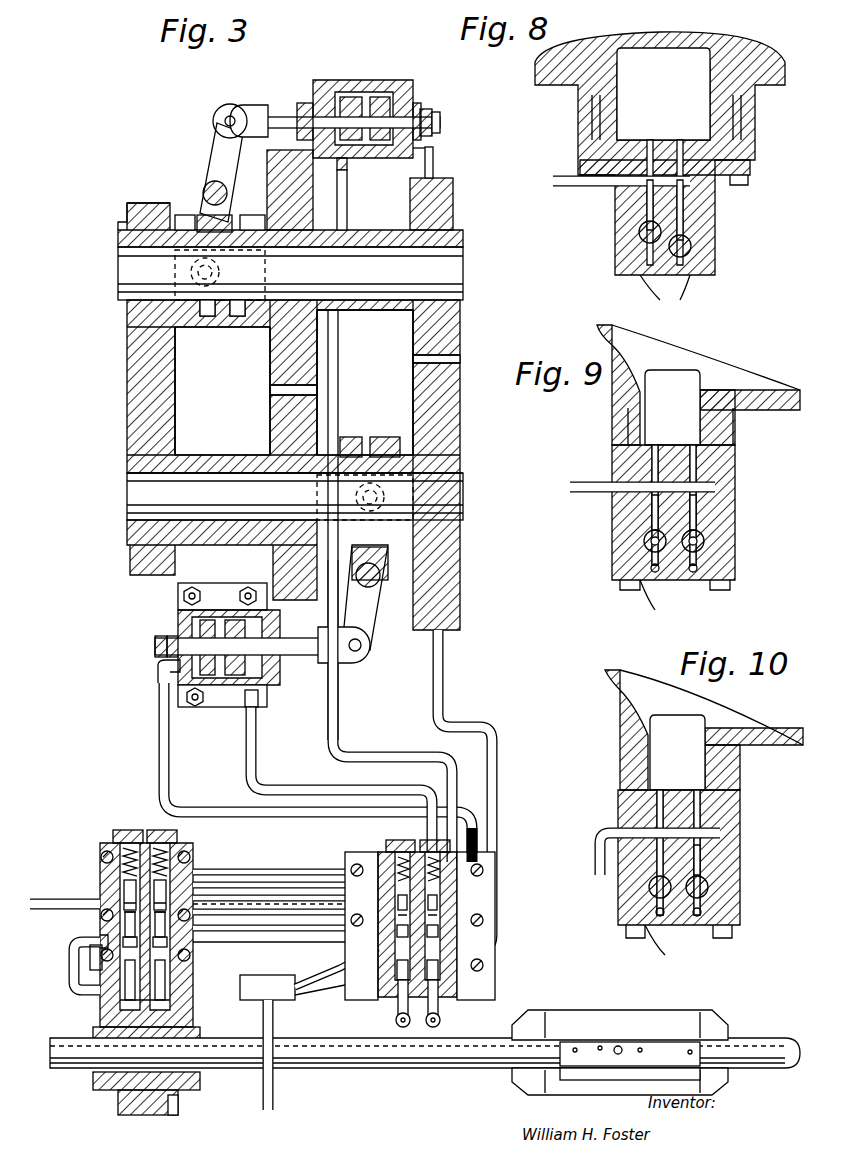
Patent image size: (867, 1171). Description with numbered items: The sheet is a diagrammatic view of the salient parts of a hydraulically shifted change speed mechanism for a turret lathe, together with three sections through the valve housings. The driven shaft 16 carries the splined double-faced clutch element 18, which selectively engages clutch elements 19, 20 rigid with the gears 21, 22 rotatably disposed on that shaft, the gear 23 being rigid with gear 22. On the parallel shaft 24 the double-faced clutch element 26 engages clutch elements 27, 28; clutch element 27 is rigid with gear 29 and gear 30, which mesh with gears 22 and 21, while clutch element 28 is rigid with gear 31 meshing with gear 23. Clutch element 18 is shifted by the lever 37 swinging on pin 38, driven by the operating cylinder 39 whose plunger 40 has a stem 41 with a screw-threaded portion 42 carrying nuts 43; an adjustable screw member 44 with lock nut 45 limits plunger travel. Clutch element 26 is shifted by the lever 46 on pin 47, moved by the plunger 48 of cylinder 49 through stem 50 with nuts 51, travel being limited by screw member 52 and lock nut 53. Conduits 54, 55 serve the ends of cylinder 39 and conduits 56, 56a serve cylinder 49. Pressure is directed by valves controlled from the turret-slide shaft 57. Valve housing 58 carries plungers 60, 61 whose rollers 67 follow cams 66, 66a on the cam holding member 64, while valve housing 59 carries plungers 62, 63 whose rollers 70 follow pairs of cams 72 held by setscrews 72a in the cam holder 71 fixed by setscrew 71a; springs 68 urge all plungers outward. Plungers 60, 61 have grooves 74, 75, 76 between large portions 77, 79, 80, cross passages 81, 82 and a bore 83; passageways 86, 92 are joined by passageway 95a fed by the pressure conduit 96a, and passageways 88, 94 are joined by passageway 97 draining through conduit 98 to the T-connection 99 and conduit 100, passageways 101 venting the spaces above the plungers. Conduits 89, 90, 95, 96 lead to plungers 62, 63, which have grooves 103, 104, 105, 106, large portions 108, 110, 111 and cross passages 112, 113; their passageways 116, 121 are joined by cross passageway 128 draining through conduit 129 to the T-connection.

In FIG. 3, the shaft 16 is at (347, 310).
In FIG. 3, the double-faced clutch element 18 is at (208, 318).
In FIG. 3, the clutch element 19 is at (182, 220).
In FIG. 3, the clutch element 20 is at (255, 225).
In FIG. 3, the gear 21 is at (152, 210).
In FIG. 3, the gear 22 is at (305, 192).
In FIG. 3, the gear 23 is at (413, 340).
In FIG. 3, the shaft 24 is at (212, 480).
In FIG. 3, the double-faced clutch element 26 is at (375, 440).
In FIG. 3, the clutch element 27 is at (332, 440).
In FIG. 3, the clutch element 28 is at (400, 440).
In FIG. 3, the gear 29 is at (270, 405).
In FIG. 3, the gear 30 is at (175, 395).
In FIG. 3, the gear 31 is at (413, 388).
In FIG. 3, the lever 37 is at (215, 152).
In FIG. 3, the pin 38 is at (203, 190).
In FIG. 3, the operating cylinder 39 is at (413, 84).
In FIG. 3, the plunger 40 is at (359, 140).
In FIG. 3, the stem 41 is at (282, 116).
In FIG. 3, the screw-threaded portion 42 is at (356, 95).
In FIG. 3, the nuts 43 is at (378, 96).
In FIG. 3, the adjustable screw member 44 is at (440, 118).
In FIG. 3, the lock nut 45 is at (428, 110).
In FIG. 3, the lever 46 is at (372, 605).
In FIG. 3, the pin 47 is at (372, 583).
In FIG. 3, the plunger 48 is at (178, 628).
In FIG. 3, the cylinder 49 is at (222, 608).
In FIG. 3, the stem 50 is at (300, 638).
In FIG. 3, the nuts 51 is at (222, 696).
In FIG. 3, the screw member 52 is at (170, 656).
In FIG. 3, the lock nut 53 is at (158, 645).
In FIG. 3, the conduit 54 is at (348, 205).
In FIG. 3, the conduit 55 is at (433, 165).
In FIG. 3, the conduit 56 is at (170, 790).
In FIG. 3, the conduit 56a is at (250, 768).
In FIG. 3, the shaft 57 is at (786, 1042).
In FIG. 3, the valve housing 58 is at (100, 857).
In FIG. 9, the valve housing 58 is at (735, 480).
In FIG. 10, the valve housing 58 is at (740, 835).
In FIG. 3, the valve housing 59 is at (380, 852).
In FIG. 8, the valve housing 59 is at (715, 197).
In FIG. 3, the plunger 60 is at (125, 980).
In FIG. 9, the plunger 60 is at (645, 545).
In FIG. 10, the plunger 60 is at (648, 892).
In FIG. 3, the plunger 61 is at (193, 962).
In FIG. 9, the plunger 61 is at (705, 541).
In FIG. 10, the plunger 61 is at (710, 889).
In FIG. 3, the plunger 62 is at (400, 1000).
In FIG. 8, the plunger 62 is at (640, 236).
In FIG. 3, the plunger 63 is at (440, 1000).
In FIG. 8, the plunger 63 is at (692, 247).
In FIG. 3, the cam holding member 64 is at (112, 1088).
In FIG. 3, the cam 66 is at (140, 1116).
In FIG. 3, the cam 66a is at (173, 1117).
In FIG. 3, the roller 67 is at (100, 1030).
In FIG. 3, the springs 68 is at (118, 835).
In FIG. 3, the rollers 70 is at (400, 1024).
In FIG. 3, the cam holder 71 is at (690, 1043).
In FIG. 3, the setscrew 71a is at (618, 1046).
In FIG. 3, the cams 72 is at (532, 1016).
In FIG. 3, the setscrews 72a is at (605, 1085).
In FIG. 3, the annular groove 74 is at (123, 945).
In FIG. 10, the annular groove 74 is at (700, 940).
In FIG. 3, the annular groove 75 is at (125, 925).
In FIG. 9, the annular groove 75 is at (695, 595).
In FIG. 3, the annular groove 76 is at (124, 890).
In FIG. 3, the relatively large portion 77 is at (130, 985).
In FIG. 3, the relatively large portion 79 is at (118, 914).
In FIG. 3, the relatively large portion 80 is at (120, 882).
In FIG. 3, the cross passage 81 is at (100, 937).
In FIG. 3, the cross passage 82 is at (124, 903).
In FIG. 3, the bore 83 is at (92, 962).
In FIG. 9, the passageway 86 is at (645, 520).
In FIG. 10, the passageway 88 is at (650, 880).
In FIG. 3, the conduit 89 is at (275, 872).
In FIG. 3, the conduit 90 is at (243, 914).
In FIG. 9, the passageway 92 is at (700, 522).
In FIG. 10, the passageway 94 is at (705, 872).
In FIG. 3, the conduit 95 is at (272, 888).
In FIG. 9, the passageway 95a is at (672, 438).
In FIG. 3, the conduit 96 is at (270, 930).
In FIG. 3, the conduit 96a is at (56, 902).
In FIG. 9, the conduit 96a is at (592, 494).
In FIG. 10, the passageway 97 is at (672, 828).
In FIG. 3, the conduit 98 is at (74, 962).
In FIG. 3, the T-connection 99 is at (268, 978).
In FIG. 3, the conduit 100 is at (268, 1100).
In FIG. 9, the passageways 101 is at (690, 572).
In FIG. 10, the passageways 101 is at (693, 918).
In FIG. 3, the annular groove 103 is at (465, 985).
In FIG. 8, the annular groove 103 is at (665, 289).
In FIG. 3, the annular groove 104 is at (440, 930).
In FIG. 3, the annular groove 105 is at (440, 905).
In FIG. 3, the annular groove 106 is at (340, 895).
In FIG. 3, the relatively large portion 108 is at (355, 987).
In FIG. 3, the relatively large portion 110 is at (300, 896).
In FIG. 3, the relatively large portion 111 is at (348, 858).
In FIG. 3, the cross passage 112 is at (440, 915).
In FIG. 3, the cross passage 113 is at (460, 880).
In FIG. 8, the passageway 116 is at (645, 205).
In FIG. 8, the passageway 121 is at (688, 222).
In FIG. 8, the cross passageway 128 is at (660, 165).
In FIG. 3, the conduit 129 is at (318, 968).
In FIG. 8, the conduit 129 is at (556, 188).